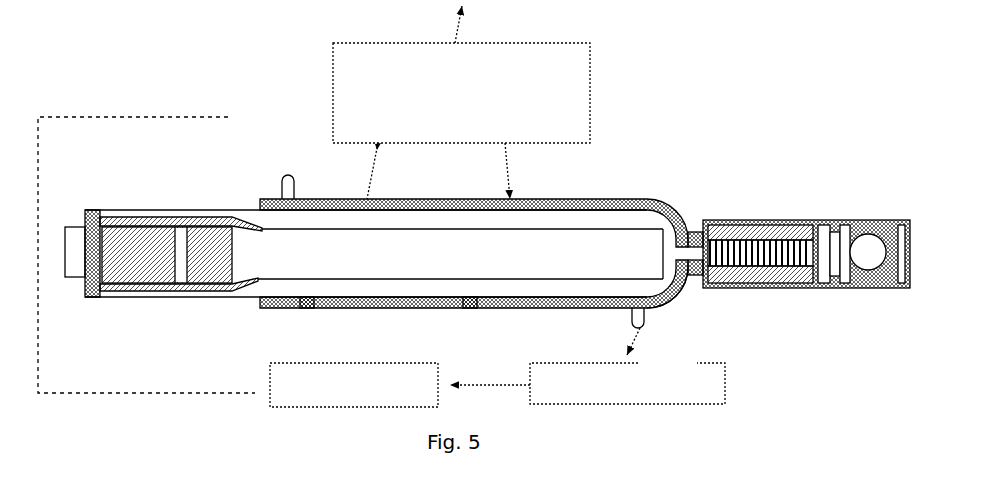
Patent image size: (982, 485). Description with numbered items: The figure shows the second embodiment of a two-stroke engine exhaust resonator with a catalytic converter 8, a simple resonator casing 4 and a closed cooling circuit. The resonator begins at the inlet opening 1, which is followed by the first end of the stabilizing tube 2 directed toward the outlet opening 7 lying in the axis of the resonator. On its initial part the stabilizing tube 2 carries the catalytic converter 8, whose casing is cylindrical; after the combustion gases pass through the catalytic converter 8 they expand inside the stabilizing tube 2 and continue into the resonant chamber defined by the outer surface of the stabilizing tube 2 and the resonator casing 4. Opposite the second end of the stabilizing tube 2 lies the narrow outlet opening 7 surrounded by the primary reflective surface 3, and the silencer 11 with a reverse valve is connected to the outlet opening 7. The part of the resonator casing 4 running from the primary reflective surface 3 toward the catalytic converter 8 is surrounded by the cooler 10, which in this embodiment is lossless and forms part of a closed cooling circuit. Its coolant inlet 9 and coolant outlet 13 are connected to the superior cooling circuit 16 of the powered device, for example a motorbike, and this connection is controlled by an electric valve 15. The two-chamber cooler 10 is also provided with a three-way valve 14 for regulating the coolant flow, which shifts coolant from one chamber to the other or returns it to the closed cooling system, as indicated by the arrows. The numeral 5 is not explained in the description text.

The inlet opening 1 is at (68, 273).
The stabilizing tube 2 is at (483, 283).
The primary reflective surface 3 is at (690, 279).
The resonator casing 4 is at (607, 199).
The inner tube 5 is at (108, 208).
The outlet opening 7 is at (693, 231).
The catalytic converter 8 is at (148, 267).
The coolant inlet 9 is at (287, 165).
The cooler 10 is at (307, 300).
The silencer 11 is at (818, 208).
The coolant outlet 13 is at (566, 180).
The three-way valve 14 is at (461, 121).
The electric valve 15 is at (587, 383).
The superior cooling circuit 16 is at (354, 385).